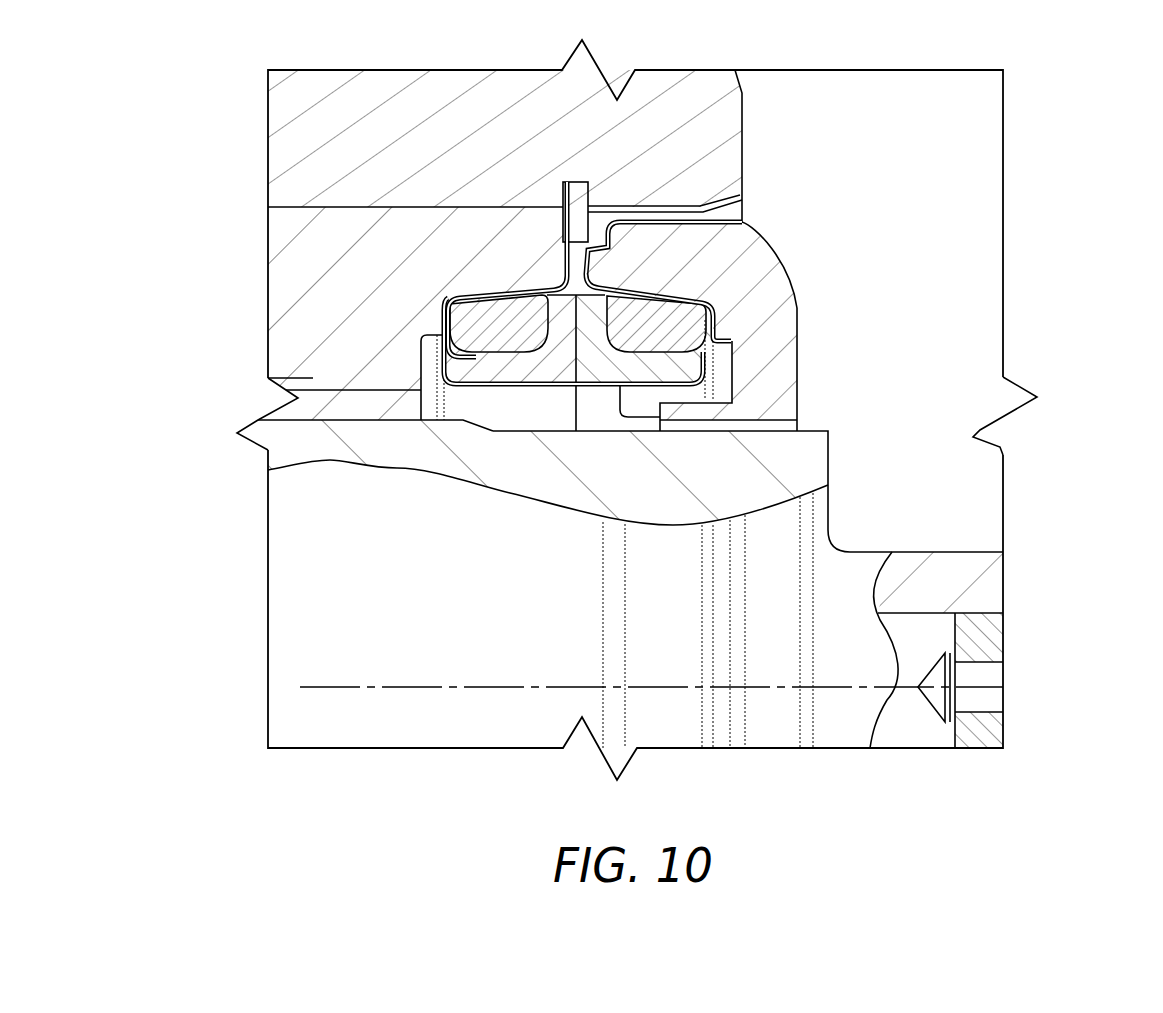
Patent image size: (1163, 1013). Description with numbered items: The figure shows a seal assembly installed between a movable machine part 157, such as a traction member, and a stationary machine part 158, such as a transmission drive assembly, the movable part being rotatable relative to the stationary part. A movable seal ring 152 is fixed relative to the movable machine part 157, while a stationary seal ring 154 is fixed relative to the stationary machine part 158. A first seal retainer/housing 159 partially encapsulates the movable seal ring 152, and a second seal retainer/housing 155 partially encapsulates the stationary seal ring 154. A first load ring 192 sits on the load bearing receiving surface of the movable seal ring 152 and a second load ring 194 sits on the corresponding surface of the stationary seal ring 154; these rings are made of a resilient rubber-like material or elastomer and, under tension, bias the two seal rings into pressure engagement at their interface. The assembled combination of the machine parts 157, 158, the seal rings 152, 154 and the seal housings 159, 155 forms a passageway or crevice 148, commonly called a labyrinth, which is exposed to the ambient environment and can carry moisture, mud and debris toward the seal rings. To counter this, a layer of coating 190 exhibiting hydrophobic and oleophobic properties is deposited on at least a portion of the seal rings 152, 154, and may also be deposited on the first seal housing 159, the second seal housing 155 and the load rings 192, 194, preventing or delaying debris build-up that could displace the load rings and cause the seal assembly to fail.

The passageway/crevice 148 is at (712, 216).
The movable seal ring 152 is at (460, 368).
The stationary seal ring 154 is at (735, 355).
The second seal retainer/housing 155 is at (772, 393).
The movable machine part 157 is at (305, 107).
The stationary machine part 158 is at (793, 467).
The first seal retainer/housing 159 is at (268, 378).
The layer of coating 190 is at (568, 258).
The first load ring 192 is at (462, 316).
The second load ring 194 is at (700, 302).